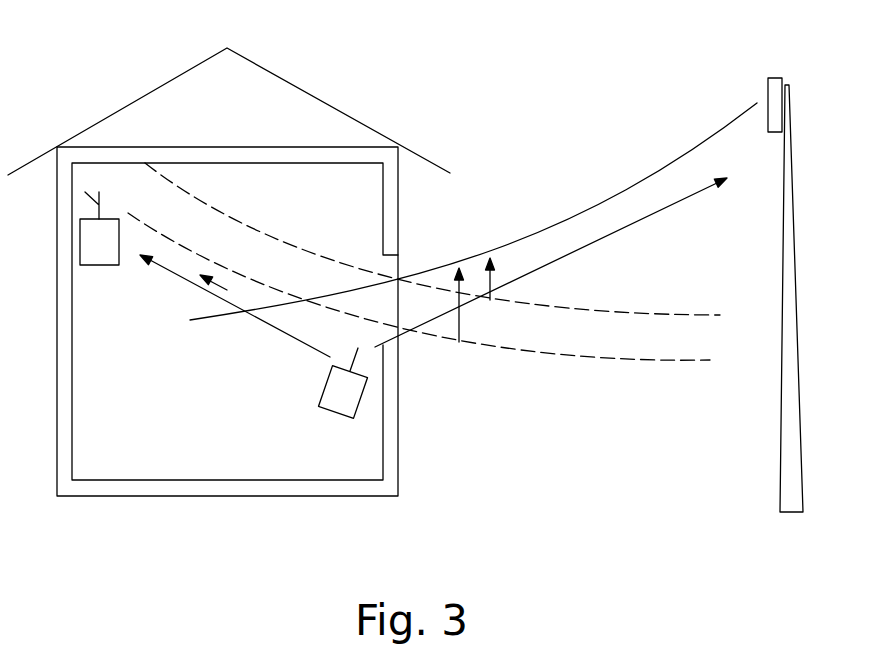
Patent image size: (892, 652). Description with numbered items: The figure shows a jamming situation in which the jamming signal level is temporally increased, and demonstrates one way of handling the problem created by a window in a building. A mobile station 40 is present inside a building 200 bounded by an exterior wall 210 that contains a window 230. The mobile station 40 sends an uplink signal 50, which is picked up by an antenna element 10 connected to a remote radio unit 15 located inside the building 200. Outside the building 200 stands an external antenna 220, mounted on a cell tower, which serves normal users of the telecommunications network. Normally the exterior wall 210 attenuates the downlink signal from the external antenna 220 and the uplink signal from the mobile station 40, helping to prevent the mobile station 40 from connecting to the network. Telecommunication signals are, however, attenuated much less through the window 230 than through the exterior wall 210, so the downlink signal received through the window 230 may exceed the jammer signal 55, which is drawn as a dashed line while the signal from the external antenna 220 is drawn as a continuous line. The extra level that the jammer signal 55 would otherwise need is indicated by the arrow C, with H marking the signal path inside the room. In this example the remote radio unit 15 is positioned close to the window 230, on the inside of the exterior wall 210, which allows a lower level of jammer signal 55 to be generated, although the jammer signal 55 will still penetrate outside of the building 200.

The building 200 is at (322, 100).
The exterior wall 210 is at (400, 171).
The window 230 is at (398, 268).
The antenna element 10 is at (99, 205).
The remote radio unit 15 is at (100, 258).
The mobile station 40 is at (337, 407).
The uplink signal 50 is at (235, 306).
The jamming signal 55 is at (424, 261).
The external antenna 220 is at (807, 295).
The home signal H is at (140, 280).
The arrow c C is at (490, 300).